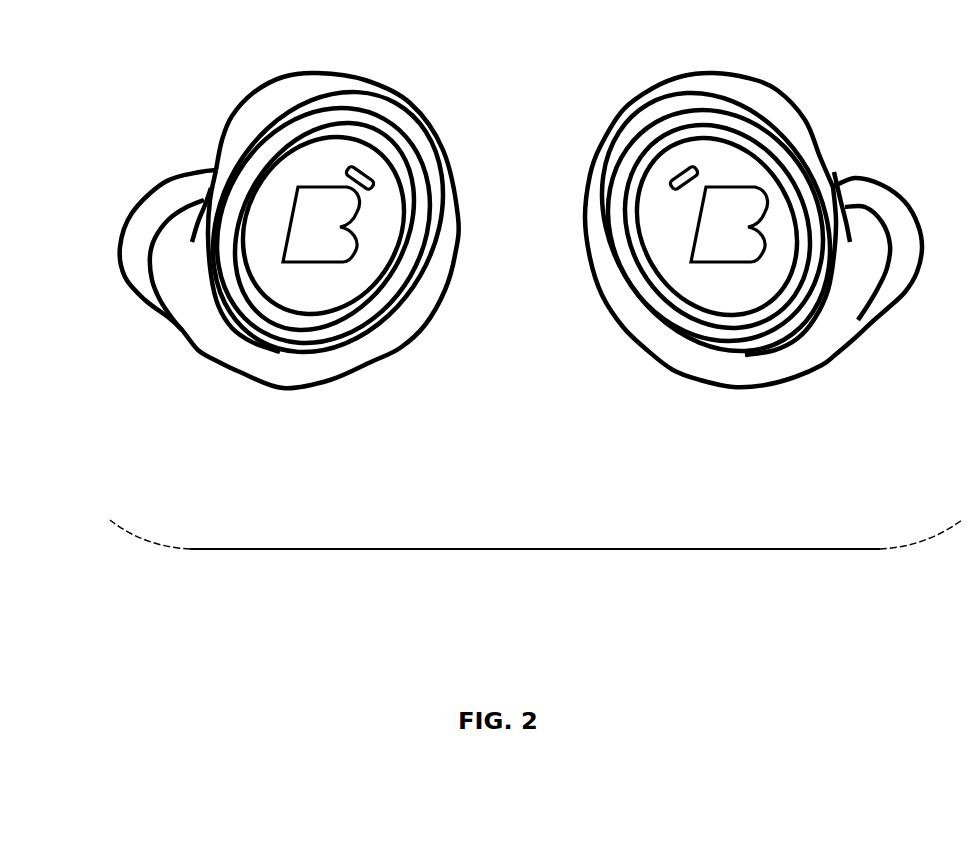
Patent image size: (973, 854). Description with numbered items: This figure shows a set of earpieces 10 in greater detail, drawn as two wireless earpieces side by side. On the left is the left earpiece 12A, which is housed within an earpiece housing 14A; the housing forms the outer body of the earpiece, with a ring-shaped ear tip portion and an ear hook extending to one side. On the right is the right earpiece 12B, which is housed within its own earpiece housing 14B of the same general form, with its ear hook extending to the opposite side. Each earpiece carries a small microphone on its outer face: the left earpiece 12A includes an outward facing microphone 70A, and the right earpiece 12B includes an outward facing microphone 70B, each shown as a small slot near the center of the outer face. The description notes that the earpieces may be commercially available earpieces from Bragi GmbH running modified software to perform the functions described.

The set of earpieces 10 is at (514, 550).
The left earpiece 12A is at (322, 215).
The right earpiece 12B is at (724, 223).
The earpiece housing 14A is at (357, 358).
The earpiece housing 14B is at (780, 387).
The outward facing microphone 70A is at (378, 181).
The outward facing microphone 70B is at (673, 172).